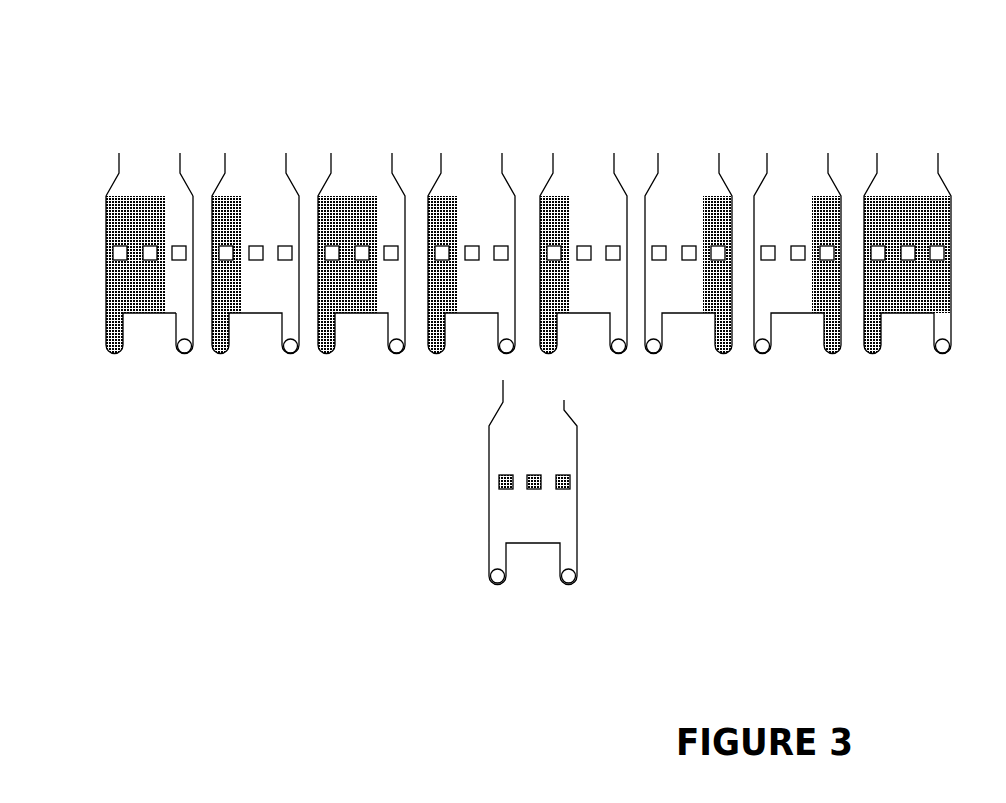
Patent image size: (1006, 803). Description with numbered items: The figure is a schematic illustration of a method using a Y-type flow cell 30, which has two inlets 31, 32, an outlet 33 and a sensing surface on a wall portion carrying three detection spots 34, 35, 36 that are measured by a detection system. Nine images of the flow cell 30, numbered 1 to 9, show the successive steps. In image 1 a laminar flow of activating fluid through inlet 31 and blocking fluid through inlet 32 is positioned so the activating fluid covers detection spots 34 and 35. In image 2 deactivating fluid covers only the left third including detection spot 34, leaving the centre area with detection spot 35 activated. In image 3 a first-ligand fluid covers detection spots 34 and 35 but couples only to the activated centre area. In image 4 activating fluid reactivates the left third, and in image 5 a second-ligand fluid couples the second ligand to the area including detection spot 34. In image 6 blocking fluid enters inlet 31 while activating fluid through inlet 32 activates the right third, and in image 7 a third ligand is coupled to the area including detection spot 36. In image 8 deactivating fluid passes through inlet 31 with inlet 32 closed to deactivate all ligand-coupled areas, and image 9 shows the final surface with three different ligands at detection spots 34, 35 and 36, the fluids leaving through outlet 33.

The image of flow cell at step one 1 is at (205, 252).
The image of flow cell at step two 2 is at (255, 241).
The image of flow cell at step three 3 is at (361, 241).
The image of flow cell at step four 4 is at (471, 241).
The image of flow cell at step five 5 is at (583, 241).
The image of flow cell at step six 6 is at (688, 241).
The image of flow cell at step seven 7 is at (797, 241).
The image of flow cell at step eight 8 is at (907, 241).
The image of flow cell at step nine 9 is at (533, 478).
The flow cell 30 is at (468, 507).
The inlet 31 is at (125, 332).
The inlet 32 is at (204, 332).
The outlet 33 is at (169, 116).
The detection spot 34 is at (135, 148).
The detection spot 35 is at (147, 330).
The detection spot 36 is at (238, 339).